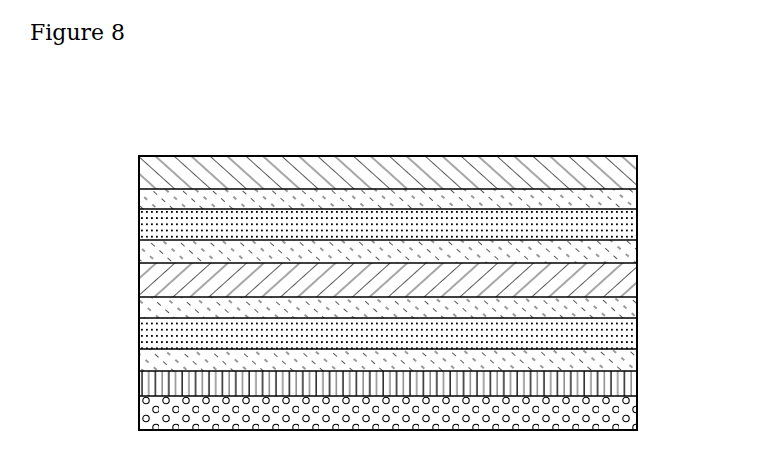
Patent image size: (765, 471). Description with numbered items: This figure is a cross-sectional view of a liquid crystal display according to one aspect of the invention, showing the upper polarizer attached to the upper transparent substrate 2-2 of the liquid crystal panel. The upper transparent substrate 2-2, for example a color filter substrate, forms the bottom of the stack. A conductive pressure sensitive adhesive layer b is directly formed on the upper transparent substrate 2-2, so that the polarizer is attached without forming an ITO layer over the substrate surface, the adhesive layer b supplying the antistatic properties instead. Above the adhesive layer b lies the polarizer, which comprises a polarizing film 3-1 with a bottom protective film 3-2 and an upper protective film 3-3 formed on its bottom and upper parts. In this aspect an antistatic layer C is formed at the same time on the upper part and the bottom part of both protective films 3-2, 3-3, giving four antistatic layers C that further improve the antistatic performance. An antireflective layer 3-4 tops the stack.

The antireflective layer 3-4 is at (566, 163).
The upper protective film 3-3 is at (140, 223).
The polarizing film or polarizing element 3-1 is at (140, 280).
The bottom protective film 3-2 is at (140, 339).
The upper transparent substrate 2-2 is at (140, 417).
The antistatic layer C is at (634, 353).
The pressure sensitive adhesive layer b is at (637, 385).